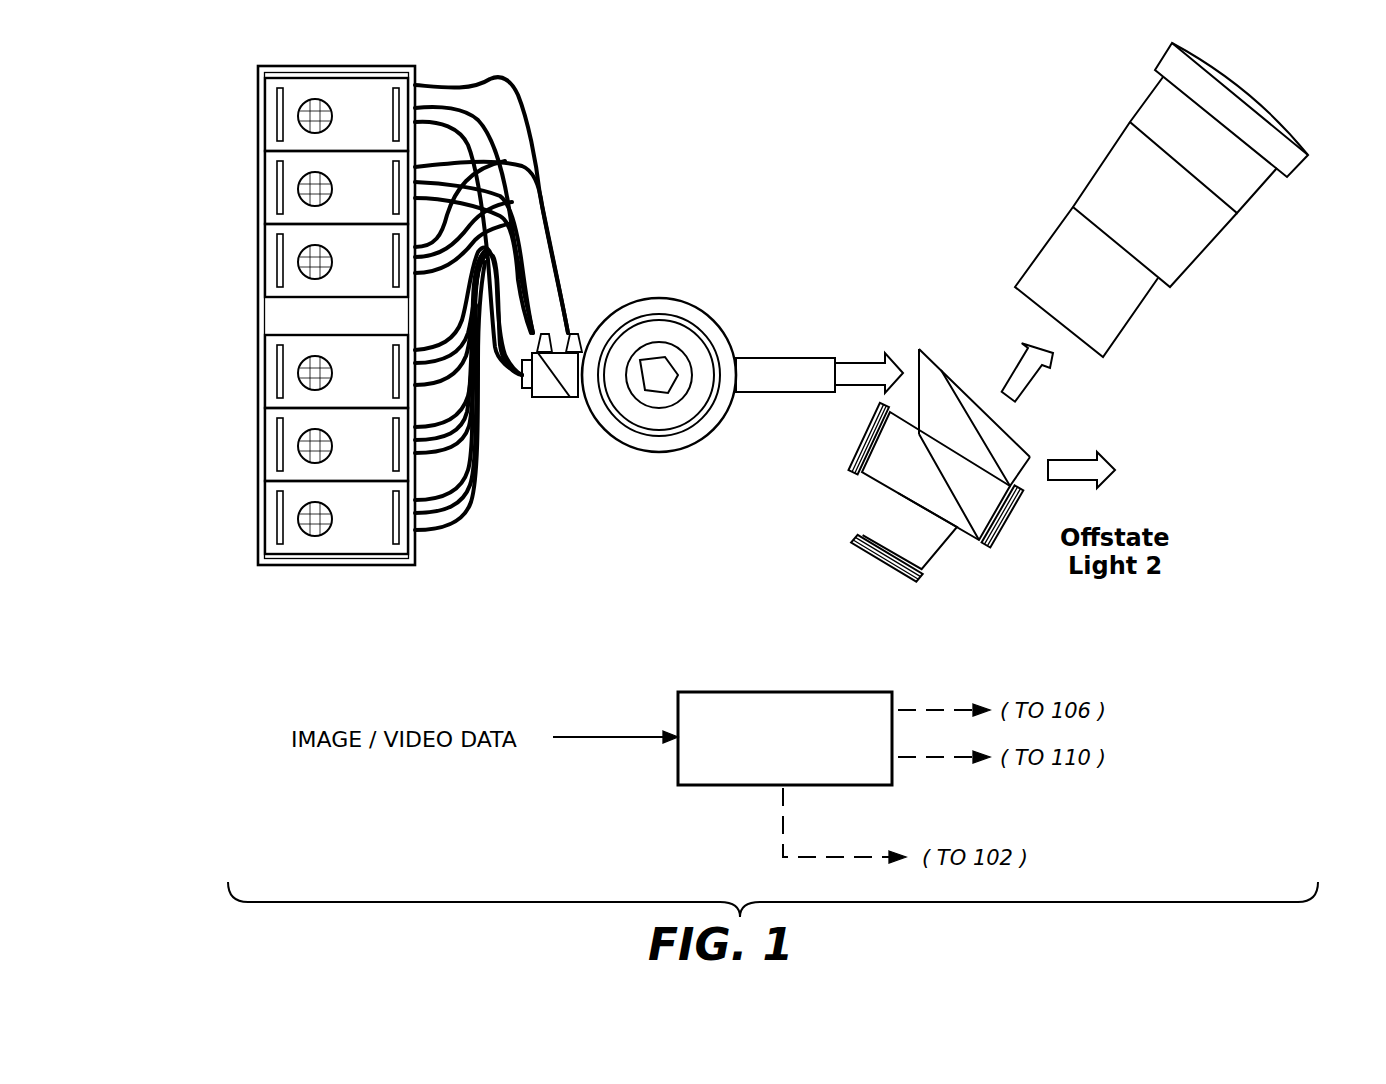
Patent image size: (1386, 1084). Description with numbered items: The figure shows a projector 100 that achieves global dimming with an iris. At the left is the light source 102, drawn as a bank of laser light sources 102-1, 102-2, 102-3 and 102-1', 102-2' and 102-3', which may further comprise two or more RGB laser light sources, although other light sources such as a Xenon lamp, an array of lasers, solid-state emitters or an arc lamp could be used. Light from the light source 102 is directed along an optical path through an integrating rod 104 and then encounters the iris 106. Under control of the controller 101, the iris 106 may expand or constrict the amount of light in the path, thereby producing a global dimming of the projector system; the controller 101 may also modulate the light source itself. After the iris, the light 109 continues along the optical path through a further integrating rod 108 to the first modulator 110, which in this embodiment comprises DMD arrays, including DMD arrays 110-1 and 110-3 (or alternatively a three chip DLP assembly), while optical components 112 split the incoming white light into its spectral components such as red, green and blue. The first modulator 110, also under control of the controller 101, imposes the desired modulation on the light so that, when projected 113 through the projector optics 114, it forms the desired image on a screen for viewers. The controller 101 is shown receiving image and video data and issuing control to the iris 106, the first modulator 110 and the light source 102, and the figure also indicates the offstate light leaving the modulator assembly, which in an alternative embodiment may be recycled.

The projector 100 is at (808, 106).
The controller 101 is at (832, 692).
The light source 102 is at (258, 577).
The laser light source 102-1 is at (283, 517).
The laser light source 102-2 is at (283, 444).
The laser light source 102-3 is at (283, 371).
The laser light source 102-1' is at (280, 254).
The laser light source 102-2' is at (280, 182).
The laser light source 102-3' is at (280, 109).
The integrating rod 104 is at (553, 400).
The iris 106 is at (682, 299).
The integrating rod 108 is at (756, 359).
The light 109 is at (888, 353).
The first modulator 110 is at (852, 588).
The DMD array 110-1 is at (852, 452).
The DMD array 110-3 is at (1002, 548).
The optical components 112 is at (1003, 446).
The projected light 113 is at (1035, 384).
The projector optics 114 is at (1142, 105).